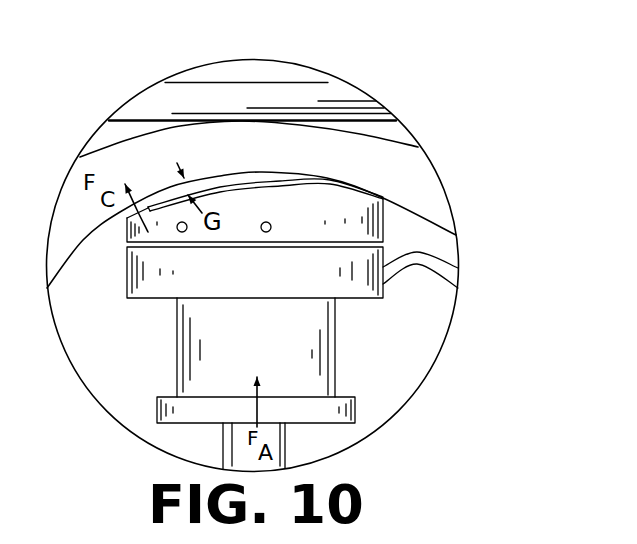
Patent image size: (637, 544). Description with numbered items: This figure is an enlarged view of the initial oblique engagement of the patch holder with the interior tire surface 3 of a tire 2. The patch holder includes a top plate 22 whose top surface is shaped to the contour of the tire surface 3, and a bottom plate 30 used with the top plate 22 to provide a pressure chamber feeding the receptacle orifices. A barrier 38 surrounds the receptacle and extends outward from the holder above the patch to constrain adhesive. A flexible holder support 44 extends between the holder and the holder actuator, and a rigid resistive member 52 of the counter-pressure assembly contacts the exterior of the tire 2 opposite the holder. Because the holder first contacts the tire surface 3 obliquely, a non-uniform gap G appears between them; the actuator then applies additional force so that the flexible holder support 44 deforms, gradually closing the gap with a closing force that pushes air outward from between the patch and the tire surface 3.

The tire 2 is at (418, 174).
The interior tire surface 3 is at (224, 177).
The top plate 22 is at (372, 226).
The bottom plate 30 is at (377, 289).
The barrier 38 is at (247, 184).
The flexible holder support 44 is at (325, 343).
The resistive member 52 is at (357, 105).